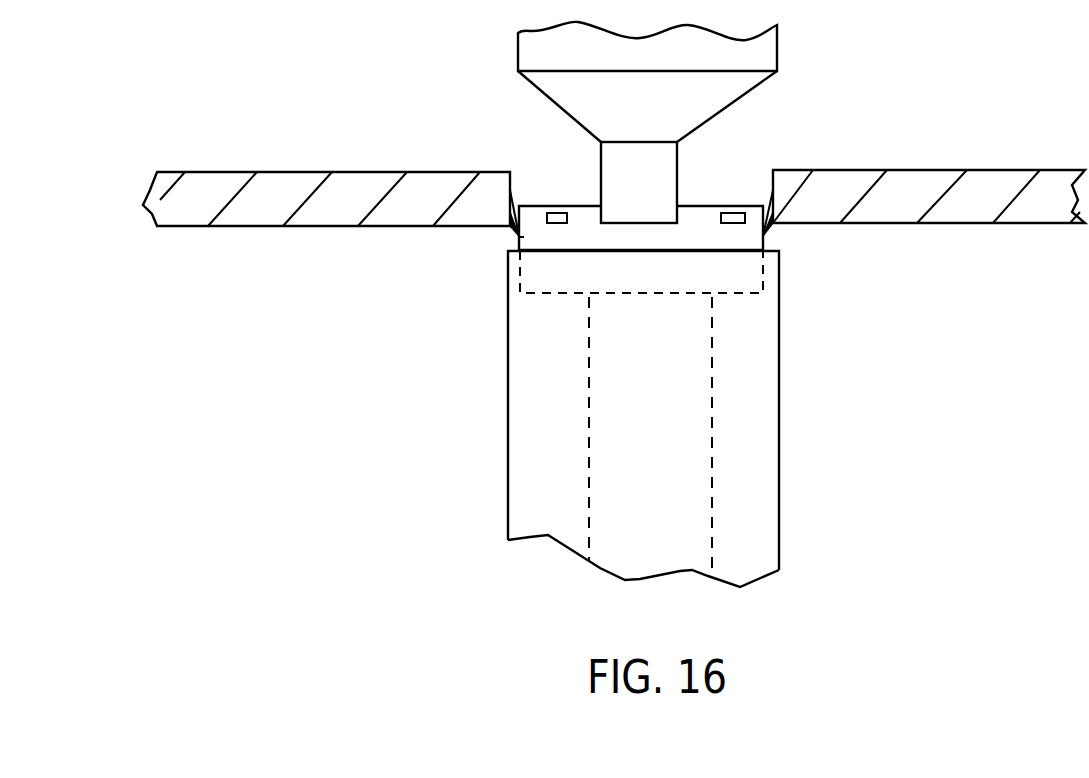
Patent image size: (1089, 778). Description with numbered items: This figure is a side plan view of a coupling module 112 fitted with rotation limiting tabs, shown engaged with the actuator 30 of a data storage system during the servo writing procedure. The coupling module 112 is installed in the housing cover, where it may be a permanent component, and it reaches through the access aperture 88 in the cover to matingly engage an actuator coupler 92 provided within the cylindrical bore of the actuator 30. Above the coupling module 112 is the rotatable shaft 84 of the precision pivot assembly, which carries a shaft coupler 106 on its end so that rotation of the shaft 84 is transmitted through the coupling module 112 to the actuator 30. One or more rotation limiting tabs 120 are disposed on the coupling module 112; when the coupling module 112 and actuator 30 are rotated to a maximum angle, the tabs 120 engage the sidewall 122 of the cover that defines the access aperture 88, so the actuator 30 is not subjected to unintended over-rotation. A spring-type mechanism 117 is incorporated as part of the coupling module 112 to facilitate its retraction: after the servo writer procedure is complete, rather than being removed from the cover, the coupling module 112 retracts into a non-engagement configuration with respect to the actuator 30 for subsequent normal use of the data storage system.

The actuator 30 is at (779, 383).
The rotatable shaft 84 is at (778, 50).
The access aperture 88 is at (546, 179).
The actuator coupler 92 is at (756, 274).
The shaft coupler 106 is at (680, 158).
The coupling module 112 is at (516, 240).
The spring-type mechanism 117 is at (767, 216).
The rotation limiting tab 120 is at (558, 211).
The sidewall 122 is at (773, 192).